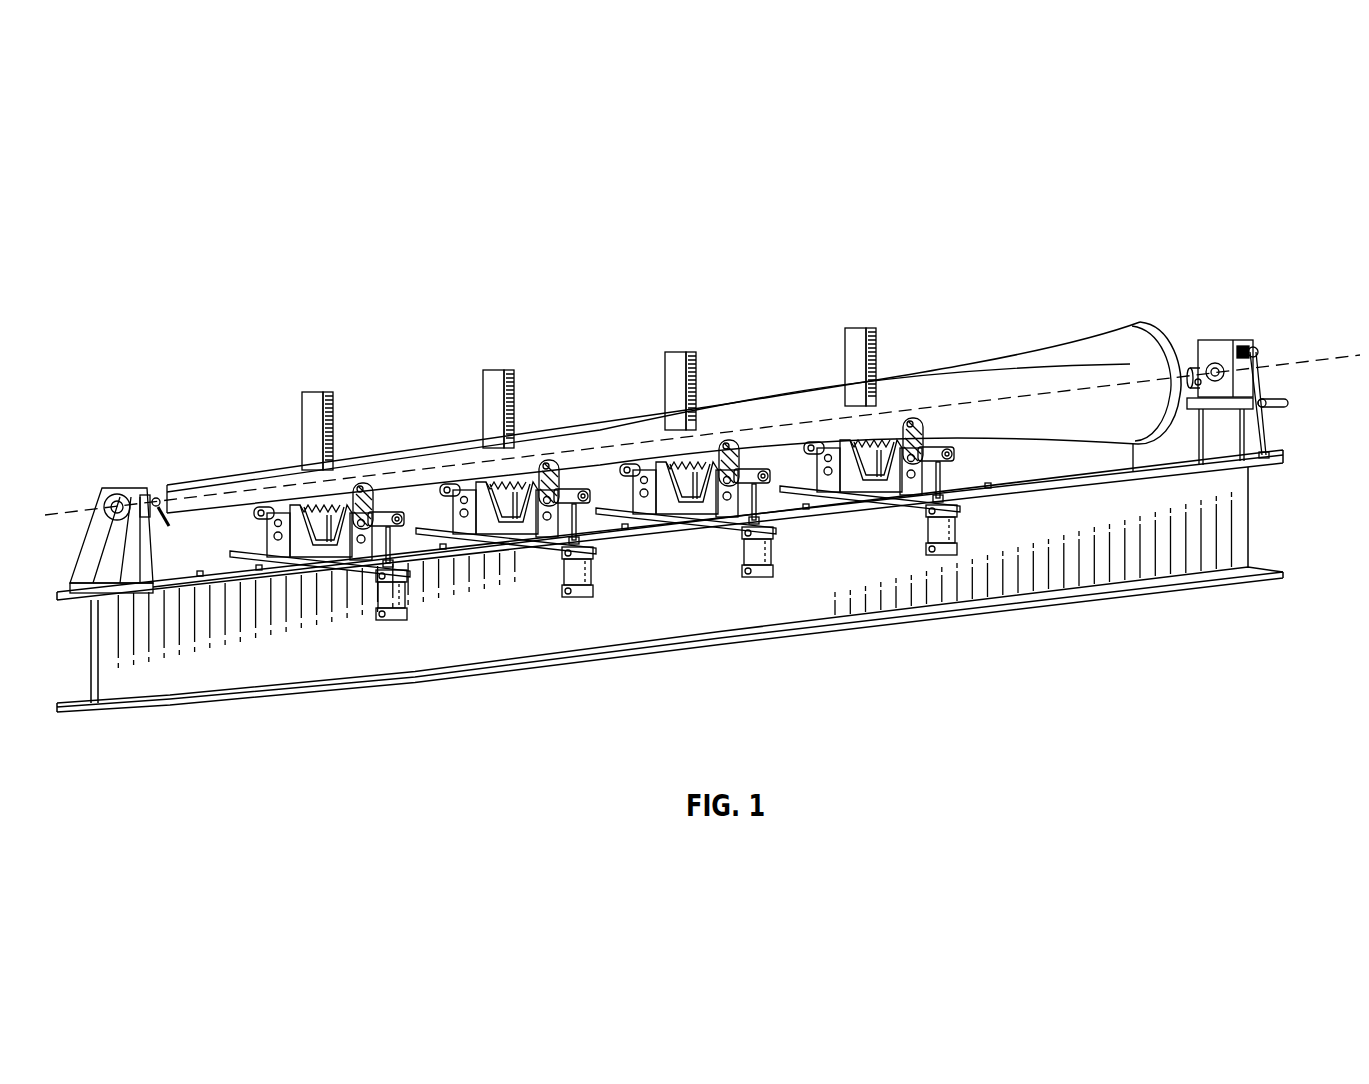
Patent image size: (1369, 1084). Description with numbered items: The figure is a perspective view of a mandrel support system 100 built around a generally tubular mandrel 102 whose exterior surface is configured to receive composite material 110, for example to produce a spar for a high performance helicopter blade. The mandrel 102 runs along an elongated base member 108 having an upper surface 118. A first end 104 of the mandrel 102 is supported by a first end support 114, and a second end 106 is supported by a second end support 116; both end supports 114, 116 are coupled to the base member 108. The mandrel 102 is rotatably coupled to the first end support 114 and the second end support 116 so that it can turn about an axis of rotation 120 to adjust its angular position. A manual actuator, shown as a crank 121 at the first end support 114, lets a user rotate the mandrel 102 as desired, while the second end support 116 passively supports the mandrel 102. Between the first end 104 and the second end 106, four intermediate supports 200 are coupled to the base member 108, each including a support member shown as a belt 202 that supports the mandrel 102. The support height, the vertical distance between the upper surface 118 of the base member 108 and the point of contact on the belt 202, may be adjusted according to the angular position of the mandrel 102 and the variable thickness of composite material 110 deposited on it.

The mandrel support system 100 is at (1022, 207).
The mandrel 102 is at (1160, 322).
The first end 104 is at (1208, 342).
The second end 106 is at (153, 498).
The base member 108 is at (155, 685).
The composite material 110 is at (763, 397).
The first end support 114 is at (1240, 344).
The second end support 116 is at (103, 493).
The upper surface 118 is at (170, 587).
The axis of rotation 120 is at (1318, 357).
The crank 121 is at (1262, 378).
The intermediate support 200 is at (345, 600).
The belt 202 is at (326, 510).